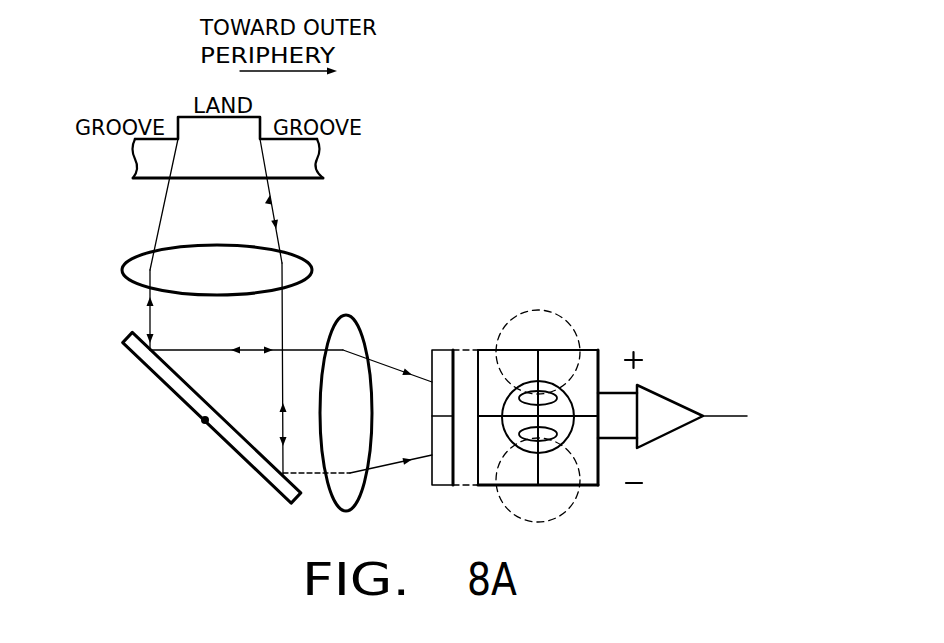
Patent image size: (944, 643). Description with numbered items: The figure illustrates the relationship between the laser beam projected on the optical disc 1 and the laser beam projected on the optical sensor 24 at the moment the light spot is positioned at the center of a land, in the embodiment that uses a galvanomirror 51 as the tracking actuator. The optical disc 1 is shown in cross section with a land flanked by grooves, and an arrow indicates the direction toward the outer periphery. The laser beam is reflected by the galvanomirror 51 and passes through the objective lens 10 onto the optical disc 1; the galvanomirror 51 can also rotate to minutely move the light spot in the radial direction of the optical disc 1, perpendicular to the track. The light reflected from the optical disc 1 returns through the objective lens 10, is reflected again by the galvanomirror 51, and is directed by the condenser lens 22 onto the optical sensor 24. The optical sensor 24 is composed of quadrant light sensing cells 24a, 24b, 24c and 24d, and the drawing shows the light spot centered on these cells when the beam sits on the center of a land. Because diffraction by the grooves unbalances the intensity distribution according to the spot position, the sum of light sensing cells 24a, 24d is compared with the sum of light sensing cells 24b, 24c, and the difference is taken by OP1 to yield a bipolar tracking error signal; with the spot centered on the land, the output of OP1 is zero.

The optical disc 1 is at (321, 170).
The objective lens 10 is at (302, 257).
The galvanomirror 51 is at (155, 372).
The condenser lens 22 is at (356, 322).
The optical sensor 24 is at (445, 352).
The light sensing cell 24a is at (488, 472).
The light sensing cell 24b is at (492, 353).
The light sensing cell 24c is at (592, 352).
The light sensing cell 24d is at (590, 472).
The operational amplifier OP1 is at (677, 418).